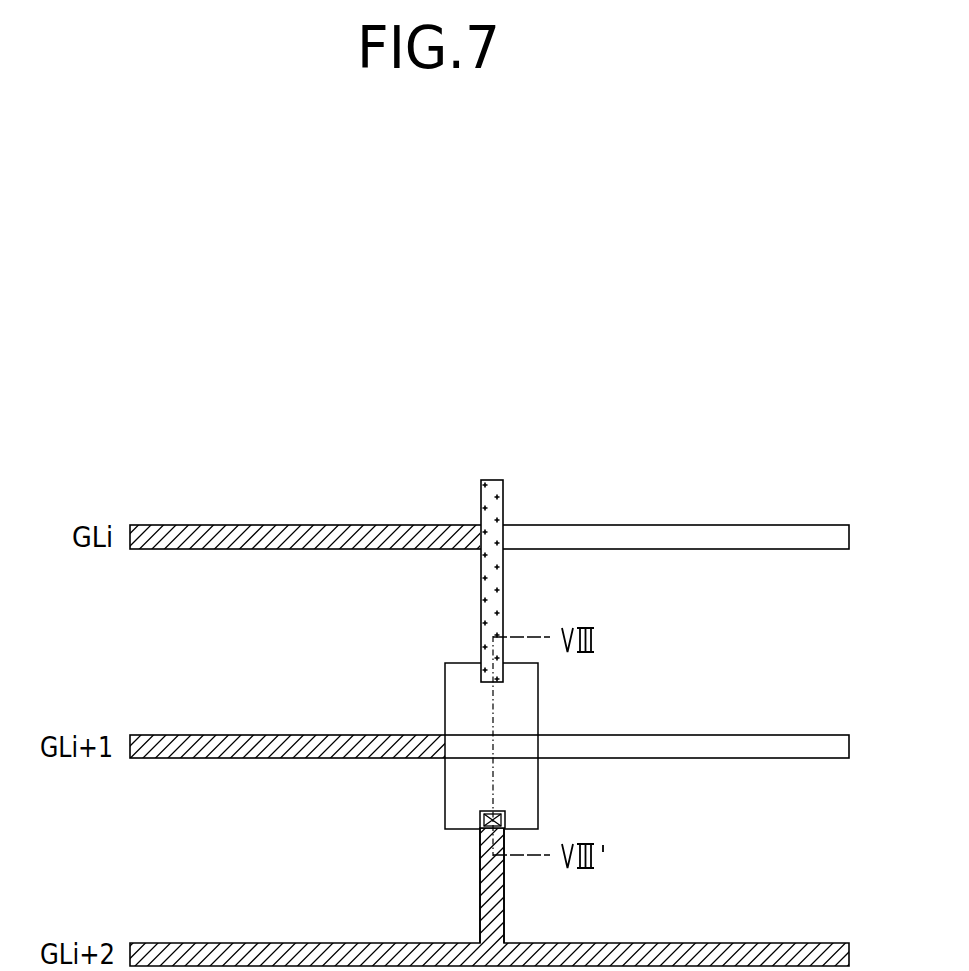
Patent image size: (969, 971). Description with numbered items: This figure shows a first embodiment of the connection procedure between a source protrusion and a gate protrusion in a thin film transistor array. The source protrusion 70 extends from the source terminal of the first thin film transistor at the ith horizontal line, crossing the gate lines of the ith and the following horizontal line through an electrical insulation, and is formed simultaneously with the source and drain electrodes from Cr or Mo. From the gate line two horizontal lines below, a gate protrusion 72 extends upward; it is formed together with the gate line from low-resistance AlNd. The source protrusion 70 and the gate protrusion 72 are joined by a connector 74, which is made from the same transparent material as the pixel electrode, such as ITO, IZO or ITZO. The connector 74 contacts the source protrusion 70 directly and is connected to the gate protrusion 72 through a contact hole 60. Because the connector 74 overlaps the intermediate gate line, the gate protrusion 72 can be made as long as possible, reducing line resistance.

The contact hole 60 is at (482, 826).
The source protrusion 70 is at (506, 580).
The gate protrusion 72 is at (506, 912).
The connector 74 is at (540, 710).